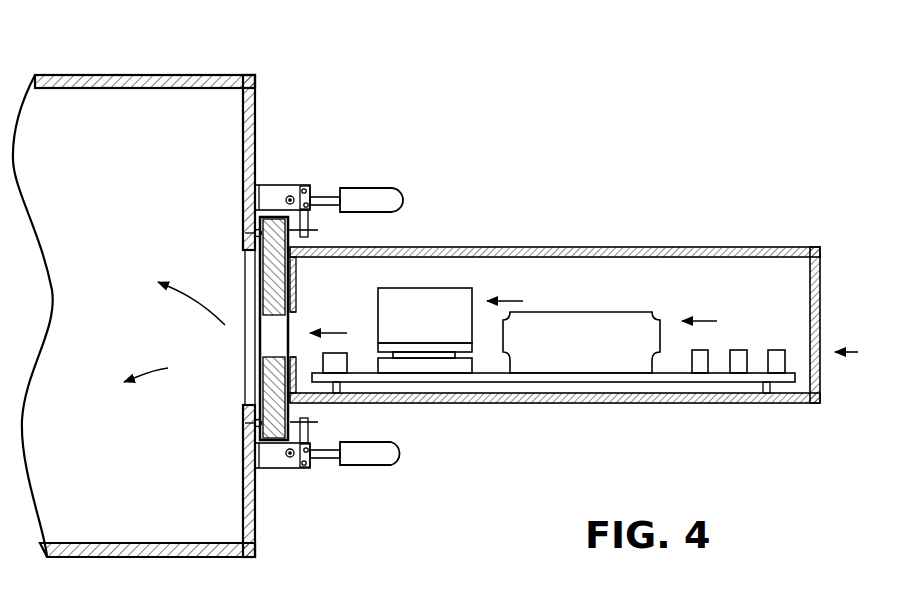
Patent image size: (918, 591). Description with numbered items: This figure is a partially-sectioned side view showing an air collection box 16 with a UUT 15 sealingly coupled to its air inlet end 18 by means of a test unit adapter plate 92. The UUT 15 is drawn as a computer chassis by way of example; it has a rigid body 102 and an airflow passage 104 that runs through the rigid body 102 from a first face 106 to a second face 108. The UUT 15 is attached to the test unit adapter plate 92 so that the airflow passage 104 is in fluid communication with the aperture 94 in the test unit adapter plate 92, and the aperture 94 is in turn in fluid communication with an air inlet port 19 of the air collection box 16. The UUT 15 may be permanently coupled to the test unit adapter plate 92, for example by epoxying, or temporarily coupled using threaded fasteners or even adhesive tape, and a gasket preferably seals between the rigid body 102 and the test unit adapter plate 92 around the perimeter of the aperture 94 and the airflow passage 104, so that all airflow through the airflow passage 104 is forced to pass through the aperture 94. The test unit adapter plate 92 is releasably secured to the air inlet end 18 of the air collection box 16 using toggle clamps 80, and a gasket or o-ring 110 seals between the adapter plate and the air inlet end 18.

The UUT 15 is at (579, 290).
The air collection box 16 is at (135, 75).
The air inlet end 18 is at (255, 103).
The air inlet port 19 is at (246, 270).
The toggle clamps 80 is at (296, 186).
The test unit adapter plate 92 is at (294, 388).
The aperture 94 is at (268, 343).
The rigid body 102 is at (680, 247).
The airflow passage 104 is at (292, 326).
The first face 106 is at (820, 298).
The second face 108 is at (268, 372).
The gasket or o-ring 110 is at (245, 233).